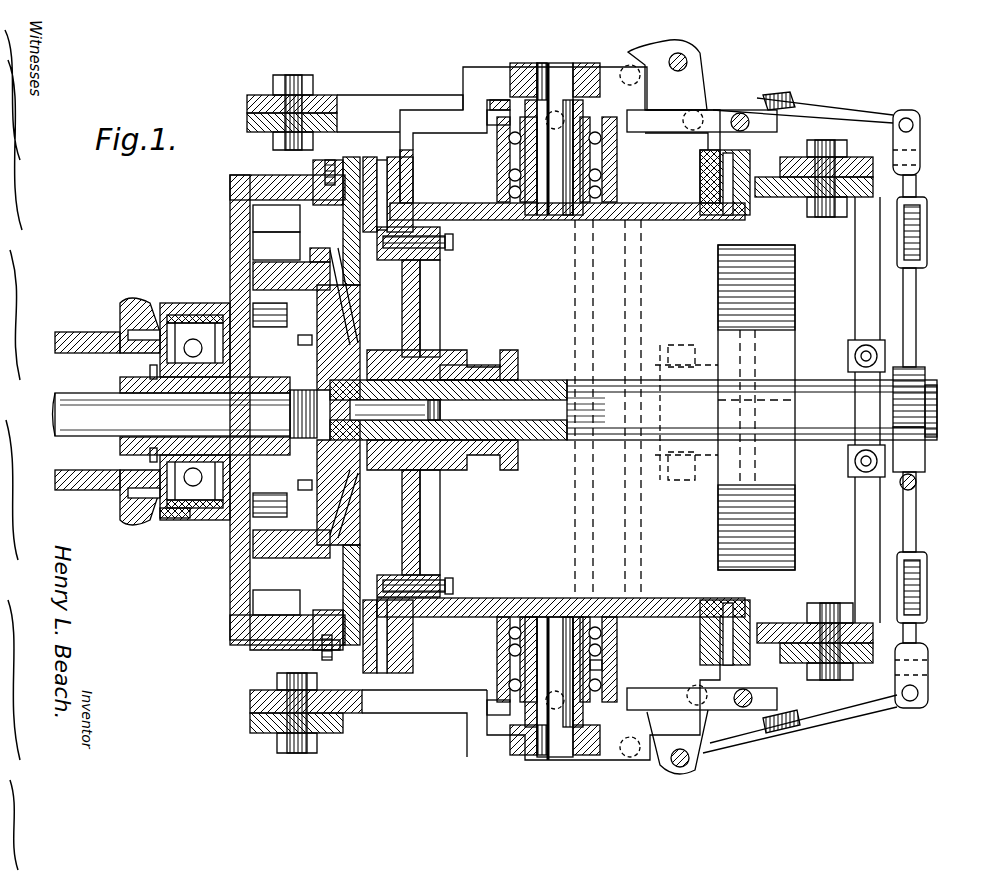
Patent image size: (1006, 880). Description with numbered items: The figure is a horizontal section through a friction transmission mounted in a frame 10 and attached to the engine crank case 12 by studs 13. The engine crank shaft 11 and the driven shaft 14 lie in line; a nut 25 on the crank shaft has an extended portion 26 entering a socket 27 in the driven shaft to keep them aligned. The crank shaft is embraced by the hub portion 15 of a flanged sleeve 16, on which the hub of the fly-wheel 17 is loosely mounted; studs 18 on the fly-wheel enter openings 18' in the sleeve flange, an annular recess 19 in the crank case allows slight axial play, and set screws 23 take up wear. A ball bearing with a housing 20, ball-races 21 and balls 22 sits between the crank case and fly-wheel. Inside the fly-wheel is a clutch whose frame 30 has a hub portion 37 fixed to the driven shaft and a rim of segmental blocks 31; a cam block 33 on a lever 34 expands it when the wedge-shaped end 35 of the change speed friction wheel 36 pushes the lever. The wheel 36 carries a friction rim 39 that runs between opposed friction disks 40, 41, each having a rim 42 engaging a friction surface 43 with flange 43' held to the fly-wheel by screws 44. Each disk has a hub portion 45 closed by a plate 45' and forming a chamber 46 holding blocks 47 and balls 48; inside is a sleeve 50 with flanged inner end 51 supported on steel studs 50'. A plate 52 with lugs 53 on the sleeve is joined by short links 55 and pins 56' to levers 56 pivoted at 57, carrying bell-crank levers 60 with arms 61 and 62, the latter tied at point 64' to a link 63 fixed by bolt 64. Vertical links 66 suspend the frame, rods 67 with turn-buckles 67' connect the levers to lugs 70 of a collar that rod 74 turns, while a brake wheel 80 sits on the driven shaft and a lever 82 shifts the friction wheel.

The frame 10 is at (385, 125).
The engine crank shaft 11 is at (172, 414).
The crank case 12 is at (55, 353).
The studs 13 is at (130, 325).
The driven shaft 14 is at (540, 442).
The hub portion of flanged sleeve 15 is at (205, 416).
The flanged sleeve 16 is at (215, 598).
The fly-wheel 17 is at (272, 407).
The studs 18 is at (259, 422).
The openings 18' is at (262, 244).
The annular recess 19 is at (150, 370).
The housing or case 20 is at (200, 320).
The ball-races 21 is at (203, 508).
The balls 22 is at (190, 340).
The set screws 23 is at (348, 320).
The nut 25 is at (274, 414).
The extended portion 26 is at (395, 410).
The socket or bearing 27 is at (465, 365).
The clutch frame 30 is at (232, 612).
The segmental blocks 31 is at (276, 410).
The cam block 33 is at (276, 246).
The lever 34 is at (425, 305).
The wedge-shaped end 35 is at (425, 485).
The change speed friction wheel 36 is at (440, 518).
The hub portion 37 is at (440, 360).
The friction annulus or rim 39 is at (450, 240).
The friction disk 40 is at (690, 220).
The friction disk 41 is at (495, 598).
The friction rim 42 is at (368, 160).
The friction surface 43 is at (296, 423).
The inwardly extending flange 43' is at (265, 654).
The screws 44 is at (325, 170).
The hub portion 45 is at (468, 409).
The plate 45' is at (470, 416).
The chamber 46 is at (605, 660).
The blocks 47 is at (617, 150).
The balls 48 is at (505, 175).
The sleeve 50 is at (577, 428).
The steel studs 50' is at (585, 405).
The flanged inner end 51 is at (555, 218).
The plate or bar 52 is at (515, 95).
The lugs 53 is at (555, 139).
The short links 55 is at (520, 65).
The levers 56 is at (815, 412).
The pins 56' is at (543, 406).
The pivot 57 is at (630, 757).
The bell-crank levers 60 is at (695, 45).
The arm 61 is at (675, 52).
The arm 62 is at (708, 80).
The link 63 is at (778, 95).
The bolt 64 is at (756, 402).
The connection point 64' is at (685, 407).
The vertical links 66 is at (313, 90).
The rods 67 is at (941, 413).
The turn-buckles 67' is at (940, 410).
The lugs 70 is at (937, 440).
The rod 74 is at (918, 482).
The brake wheel 80 is at (795, 475).
The lever 82 is at (680, 345).